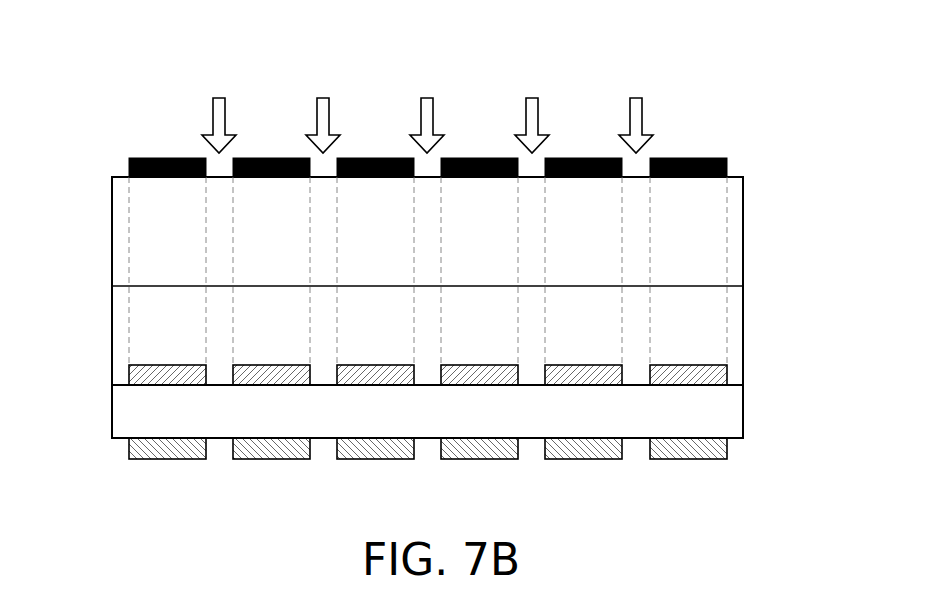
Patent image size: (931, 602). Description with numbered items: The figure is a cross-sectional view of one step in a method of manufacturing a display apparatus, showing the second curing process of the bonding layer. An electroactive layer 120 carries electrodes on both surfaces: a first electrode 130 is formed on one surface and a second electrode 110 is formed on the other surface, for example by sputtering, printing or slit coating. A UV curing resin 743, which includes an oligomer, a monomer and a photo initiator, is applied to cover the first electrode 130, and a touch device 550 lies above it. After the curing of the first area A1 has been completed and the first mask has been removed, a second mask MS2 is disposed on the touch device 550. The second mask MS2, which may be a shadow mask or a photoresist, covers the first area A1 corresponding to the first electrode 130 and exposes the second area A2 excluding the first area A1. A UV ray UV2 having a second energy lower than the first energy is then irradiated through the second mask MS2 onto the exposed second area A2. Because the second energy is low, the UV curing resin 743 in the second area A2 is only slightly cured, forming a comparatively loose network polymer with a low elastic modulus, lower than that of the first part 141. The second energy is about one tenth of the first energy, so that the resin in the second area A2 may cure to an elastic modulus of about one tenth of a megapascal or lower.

The touch device 550 is at (720, 226).
The first part 141 is at (590, 308).
The UV curing resin 743 is at (630, 335).
The first electrode 130 is at (593, 373).
The electroactive layer 120 is at (712, 411).
The second electrode 110 is at (600, 452).
The first area A1 is at (165, 218).
The second area A2 is at (222, 257).
The UV ray UV2 is at (427, 108).
The second mask MS2 is at (688, 157).